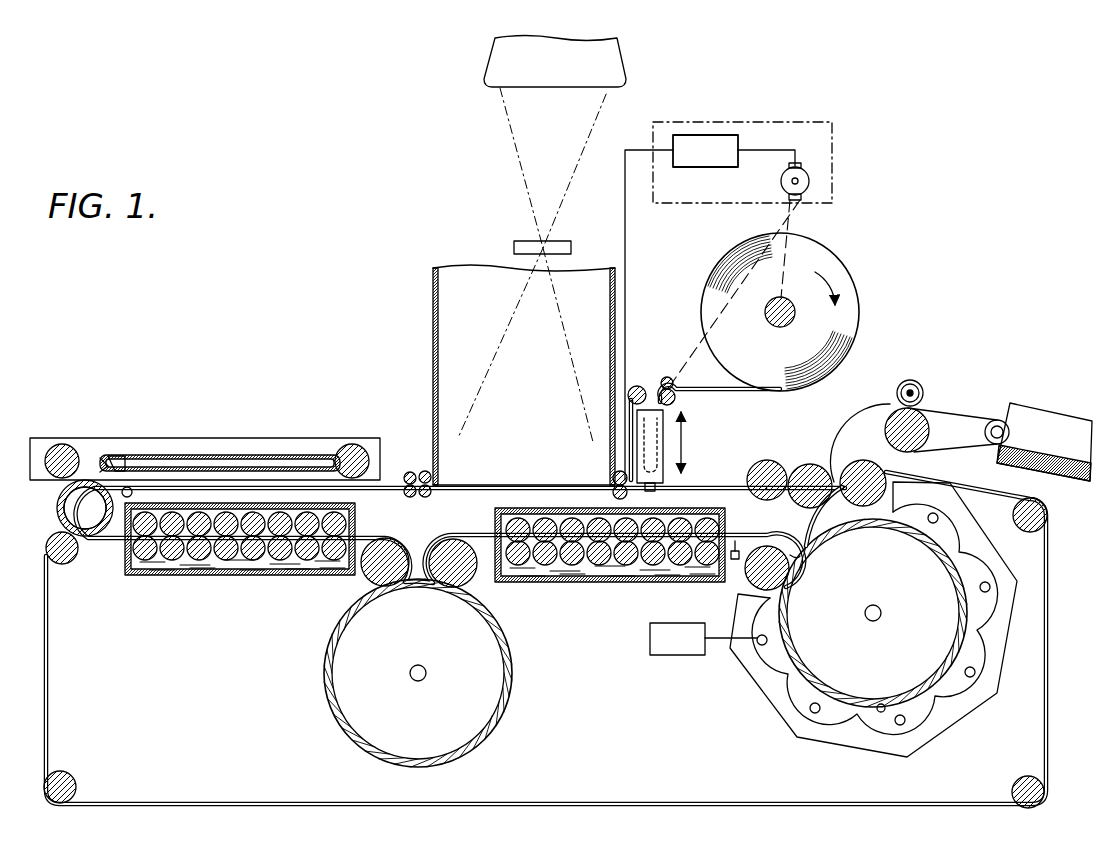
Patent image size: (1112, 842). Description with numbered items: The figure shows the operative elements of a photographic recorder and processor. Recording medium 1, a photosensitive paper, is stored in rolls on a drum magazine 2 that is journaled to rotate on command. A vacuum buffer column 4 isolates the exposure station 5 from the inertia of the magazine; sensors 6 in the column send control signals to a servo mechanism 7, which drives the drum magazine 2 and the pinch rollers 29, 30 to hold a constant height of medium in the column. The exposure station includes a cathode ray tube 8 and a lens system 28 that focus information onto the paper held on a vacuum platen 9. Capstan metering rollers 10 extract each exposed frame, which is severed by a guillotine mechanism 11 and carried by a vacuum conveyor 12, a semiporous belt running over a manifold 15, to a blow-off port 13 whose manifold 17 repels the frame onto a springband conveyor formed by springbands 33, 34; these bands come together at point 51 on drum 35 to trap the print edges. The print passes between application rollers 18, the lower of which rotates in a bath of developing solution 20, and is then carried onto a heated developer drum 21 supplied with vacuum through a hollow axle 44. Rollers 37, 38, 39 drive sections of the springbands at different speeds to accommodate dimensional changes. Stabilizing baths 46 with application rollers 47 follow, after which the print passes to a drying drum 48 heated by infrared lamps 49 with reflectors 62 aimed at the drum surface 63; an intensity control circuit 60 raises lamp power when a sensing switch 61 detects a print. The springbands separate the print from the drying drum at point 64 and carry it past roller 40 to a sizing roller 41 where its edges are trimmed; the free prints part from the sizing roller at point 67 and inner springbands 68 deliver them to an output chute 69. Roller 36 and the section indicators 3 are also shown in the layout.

The recording medium 1 is at (742, 398).
The drum magazine 2 is at (855, 306).
The section line 3- 3 is at (84, 392).
The vacuum buffer column 4 is at (279, 393).
The exposure station 5 is at (455, 397).
The sensors 6 is at (642, 468).
The servo mechanism 7 is at (788, 122).
The cathode ray tube 8 is at (613, 68).
The vacuum platen 9 is at (519, 489).
The capstan metering rollers 10 is at (425, 470).
The guillotine mechanism 11 is at (408, 471).
The vacuum conveyor 12 is at (318, 440).
The blow-off port 13 is at (128, 455).
The manifold 15 is at (212, 455).
The blow-off manifold 17 is at (118, 452).
The application rollers 18 is at (345, 527).
The bath of solution 20 is at (240, 577).
The heated developer drum 21 is at (428, 726).
The lens systems 28 is at (522, 242).
The pinch roller 29 is at (670, 378).
The pinch roller 30 is at (677, 400).
The springband 33 is at (228, 801).
The springband 34 is at (752, 486).
The drum 35 is at (57, 497).
The roller 36 is at (46, 550).
The roller 37 is at (366, 578).
The roller 38 is at (478, 580).
The roller 39 is at (802, 557).
The roller 40 is at (880, 457).
The sizing roller 41 is at (890, 432).
The hollow axle 44 is at (427, 673).
The stabilizing baths 46 is at (616, 578).
The application rollers 47 is at (579, 556).
The drying drum 48 is at (841, 651).
The infrared heaters 49 is at (940, 517).
The joining point 51 is at (58, 518).
The intensity control circuit 60 is at (650, 638).
The sensing switch 61 is at (737, 551).
The reflector 62 is at (997, 627).
The drum surface 63 is at (882, 704).
The separation point 64 is at (860, 518).
The parting point 67 is at (922, 404).
The inner springbands 68 is at (985, 407).
The output chute 69 is at (1055, 418).